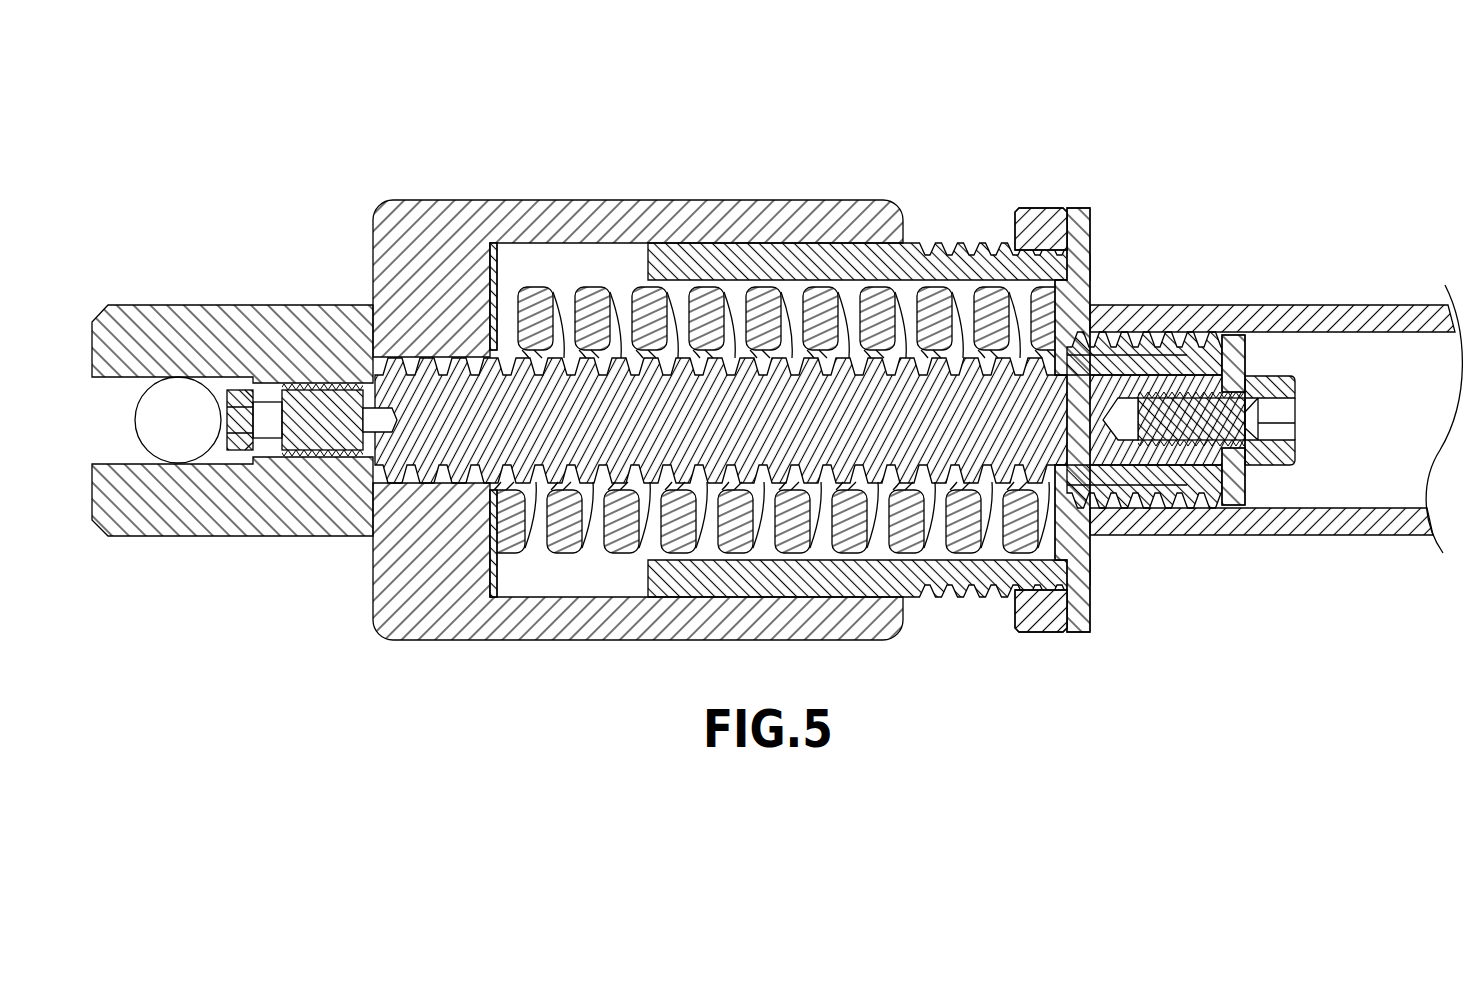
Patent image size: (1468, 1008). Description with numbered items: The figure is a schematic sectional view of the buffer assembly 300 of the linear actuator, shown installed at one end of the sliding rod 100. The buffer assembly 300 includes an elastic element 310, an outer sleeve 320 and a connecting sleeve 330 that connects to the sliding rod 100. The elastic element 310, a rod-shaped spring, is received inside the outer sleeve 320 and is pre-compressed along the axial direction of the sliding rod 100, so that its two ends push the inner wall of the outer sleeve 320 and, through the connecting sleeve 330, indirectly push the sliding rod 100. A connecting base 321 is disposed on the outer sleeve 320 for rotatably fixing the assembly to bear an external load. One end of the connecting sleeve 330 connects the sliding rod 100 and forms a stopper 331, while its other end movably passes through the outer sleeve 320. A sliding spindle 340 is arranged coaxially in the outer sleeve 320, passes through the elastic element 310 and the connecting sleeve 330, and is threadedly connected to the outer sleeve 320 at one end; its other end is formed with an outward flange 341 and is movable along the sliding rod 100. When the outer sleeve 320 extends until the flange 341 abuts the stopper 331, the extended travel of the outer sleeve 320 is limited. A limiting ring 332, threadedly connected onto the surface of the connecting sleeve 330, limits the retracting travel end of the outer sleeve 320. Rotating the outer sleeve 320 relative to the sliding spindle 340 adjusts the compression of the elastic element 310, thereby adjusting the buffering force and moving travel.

The sliding rod 100 is at (1353, 296).
The buffer assembly 300 is at (414, 156).
The elastic element 310 is at (763, 300).
The outer sleeve 320 is at (662, 205).
The connecting base 321 is at (187, 318).
The connecting sleeve 330 is at (1082, 585).
The stopper 331 is at (1200, 473).
The limiting ring 332 is at (1040, 213).
The sliding spindle 340 is at (600, 317).
The flange 341 is at (1247, 486).